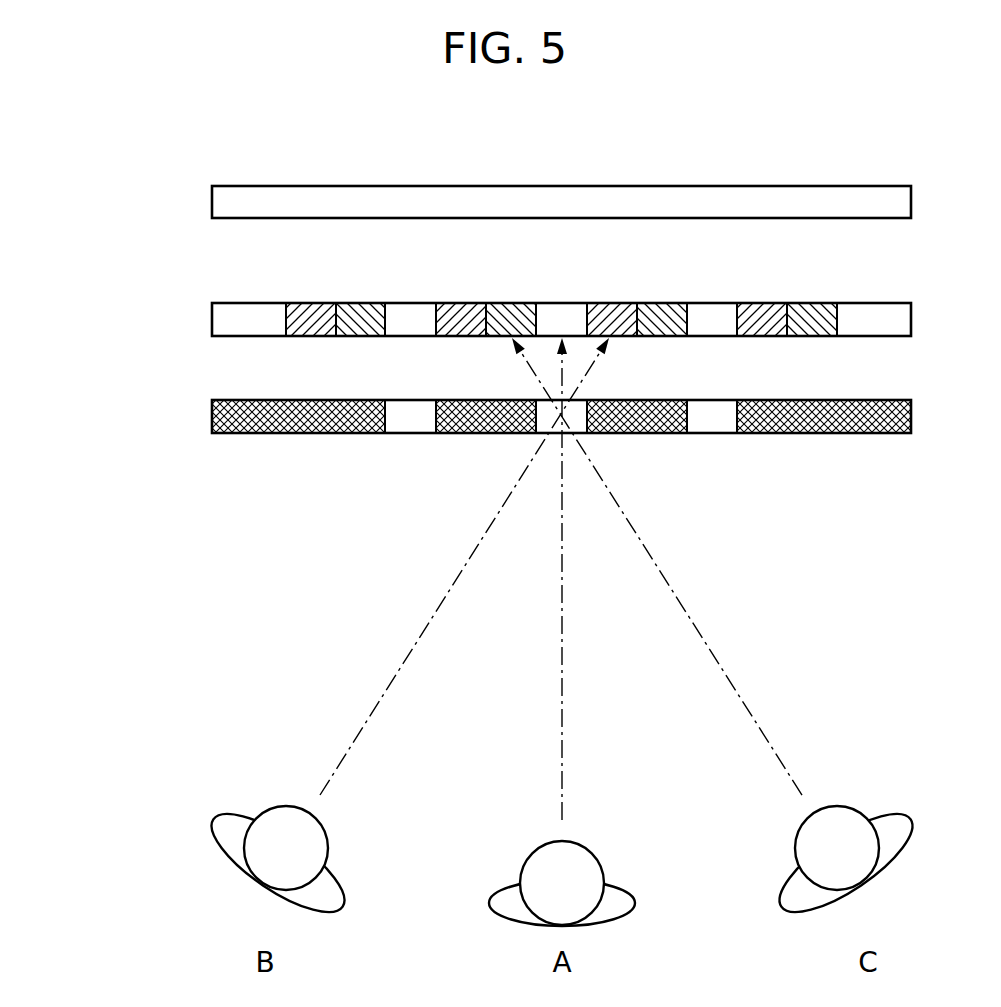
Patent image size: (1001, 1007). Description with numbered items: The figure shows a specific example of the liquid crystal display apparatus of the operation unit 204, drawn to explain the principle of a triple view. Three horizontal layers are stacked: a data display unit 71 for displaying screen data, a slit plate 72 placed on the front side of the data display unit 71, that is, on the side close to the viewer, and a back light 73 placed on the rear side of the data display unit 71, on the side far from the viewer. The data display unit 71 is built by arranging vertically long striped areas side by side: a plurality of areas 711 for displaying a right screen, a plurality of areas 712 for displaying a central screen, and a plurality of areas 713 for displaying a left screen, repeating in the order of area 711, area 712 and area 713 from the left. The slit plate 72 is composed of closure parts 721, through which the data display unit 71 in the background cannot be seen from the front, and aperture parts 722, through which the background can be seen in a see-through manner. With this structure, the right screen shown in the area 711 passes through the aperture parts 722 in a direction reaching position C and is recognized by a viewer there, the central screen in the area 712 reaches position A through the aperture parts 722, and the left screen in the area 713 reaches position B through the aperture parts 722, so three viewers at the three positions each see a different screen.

The operation unit 204 is at (127, 187).
The back light 73 is at (212, 201).
The data display unit 71 is at (212, 319).
The slit plate 72 is at (212, 419).
The area for displaying a right screen 711 is at (510, 303).
The area for displaying a central screen 712 is at (558, 303).
The area for displaying a left screen 713 is at (618, 303).
The closure part 721 is at (302, 434).
The aperture part 722 is at (415, 434).